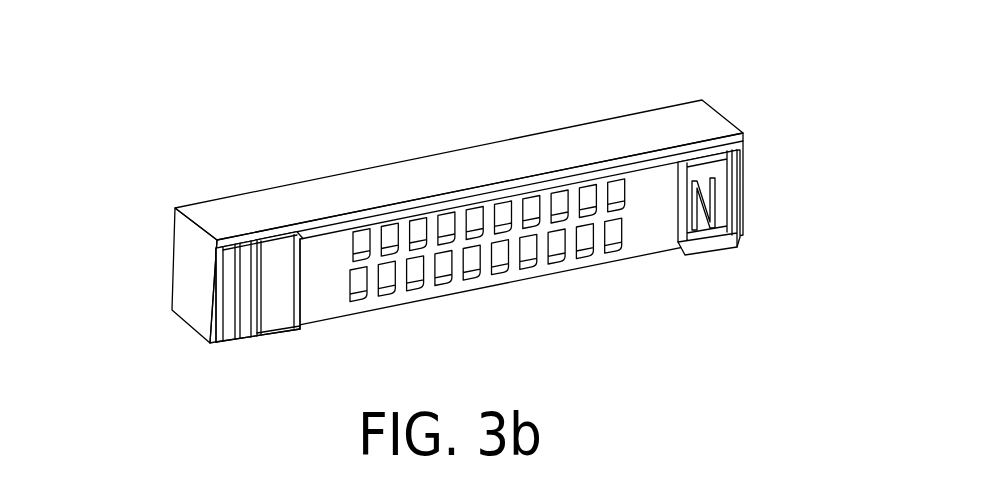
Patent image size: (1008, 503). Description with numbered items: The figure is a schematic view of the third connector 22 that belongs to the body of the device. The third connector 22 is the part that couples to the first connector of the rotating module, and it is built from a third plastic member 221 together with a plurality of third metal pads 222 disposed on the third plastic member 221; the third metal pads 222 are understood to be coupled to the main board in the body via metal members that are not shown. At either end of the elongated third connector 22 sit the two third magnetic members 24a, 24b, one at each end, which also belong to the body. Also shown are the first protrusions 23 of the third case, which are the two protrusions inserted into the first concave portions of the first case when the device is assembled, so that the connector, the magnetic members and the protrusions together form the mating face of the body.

The third connector 22 is at (60, 35).
The third plastic member 221 is at (682, 128).
The third metal pads 222 is at (332, 247).
The first protrusions 23 is at (262, 313).
The third magnetic member 24a is at (262, 281).
The third magnetic member 24b is at (713, 207).